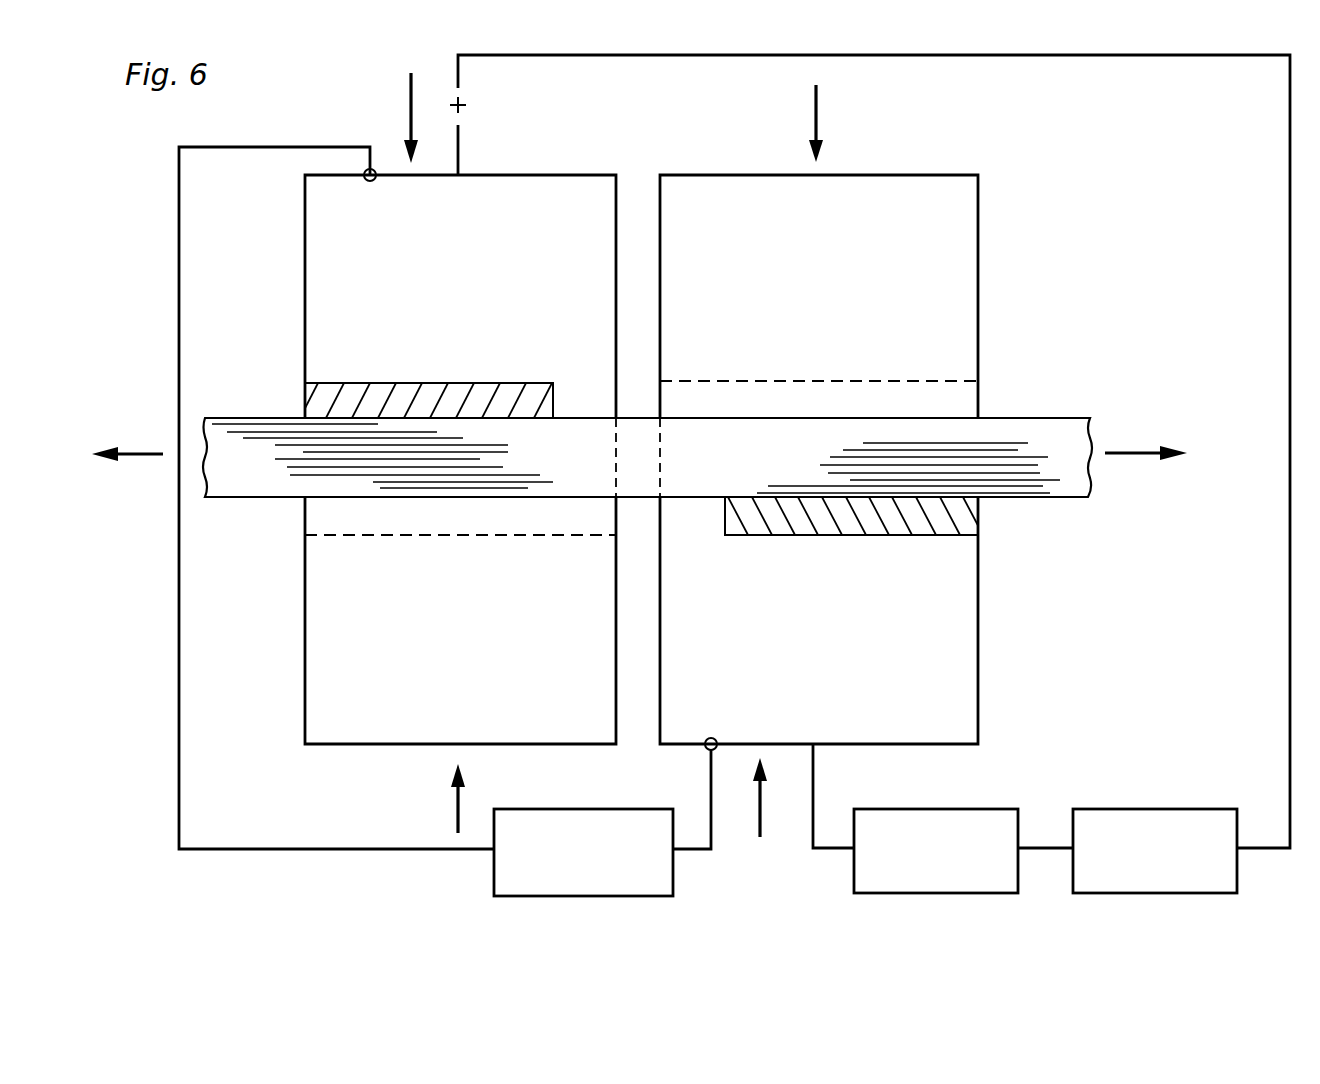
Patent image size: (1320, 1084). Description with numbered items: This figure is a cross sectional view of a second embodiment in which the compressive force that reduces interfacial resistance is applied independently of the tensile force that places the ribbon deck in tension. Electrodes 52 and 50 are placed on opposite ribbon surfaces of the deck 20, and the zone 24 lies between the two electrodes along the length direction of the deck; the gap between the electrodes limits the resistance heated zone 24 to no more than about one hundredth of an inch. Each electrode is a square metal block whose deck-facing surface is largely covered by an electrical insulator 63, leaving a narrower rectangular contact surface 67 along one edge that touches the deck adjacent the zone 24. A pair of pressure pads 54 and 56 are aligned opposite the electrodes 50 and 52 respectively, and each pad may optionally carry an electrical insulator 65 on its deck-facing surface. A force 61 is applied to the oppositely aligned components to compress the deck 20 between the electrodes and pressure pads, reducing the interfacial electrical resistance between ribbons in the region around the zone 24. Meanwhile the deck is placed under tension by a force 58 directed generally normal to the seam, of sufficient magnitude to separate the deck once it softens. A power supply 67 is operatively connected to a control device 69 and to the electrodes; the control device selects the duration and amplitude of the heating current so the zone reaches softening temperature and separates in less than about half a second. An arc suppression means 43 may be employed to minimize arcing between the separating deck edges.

The deck 20 is at (1025, 418).
The zone 24 is at (654, 449).
The arc suppression means 43 is at (673, 882).
The electrode 50 is at (980, 671).
The electrode 52 is at (305, 262).
The pressure pad 54 is at (980, 268).
The pressure pad 56 is at (305, 712).
The force 58 is at (145, 460).
The force 61 is at (411, 111).
The electrical insulator 63 is at (325, 383).
The electrical insulator 65 is at (473, 535).
The electrode contact surface 67 is at (589, 418).
The control device 69 is at (1157, 809).